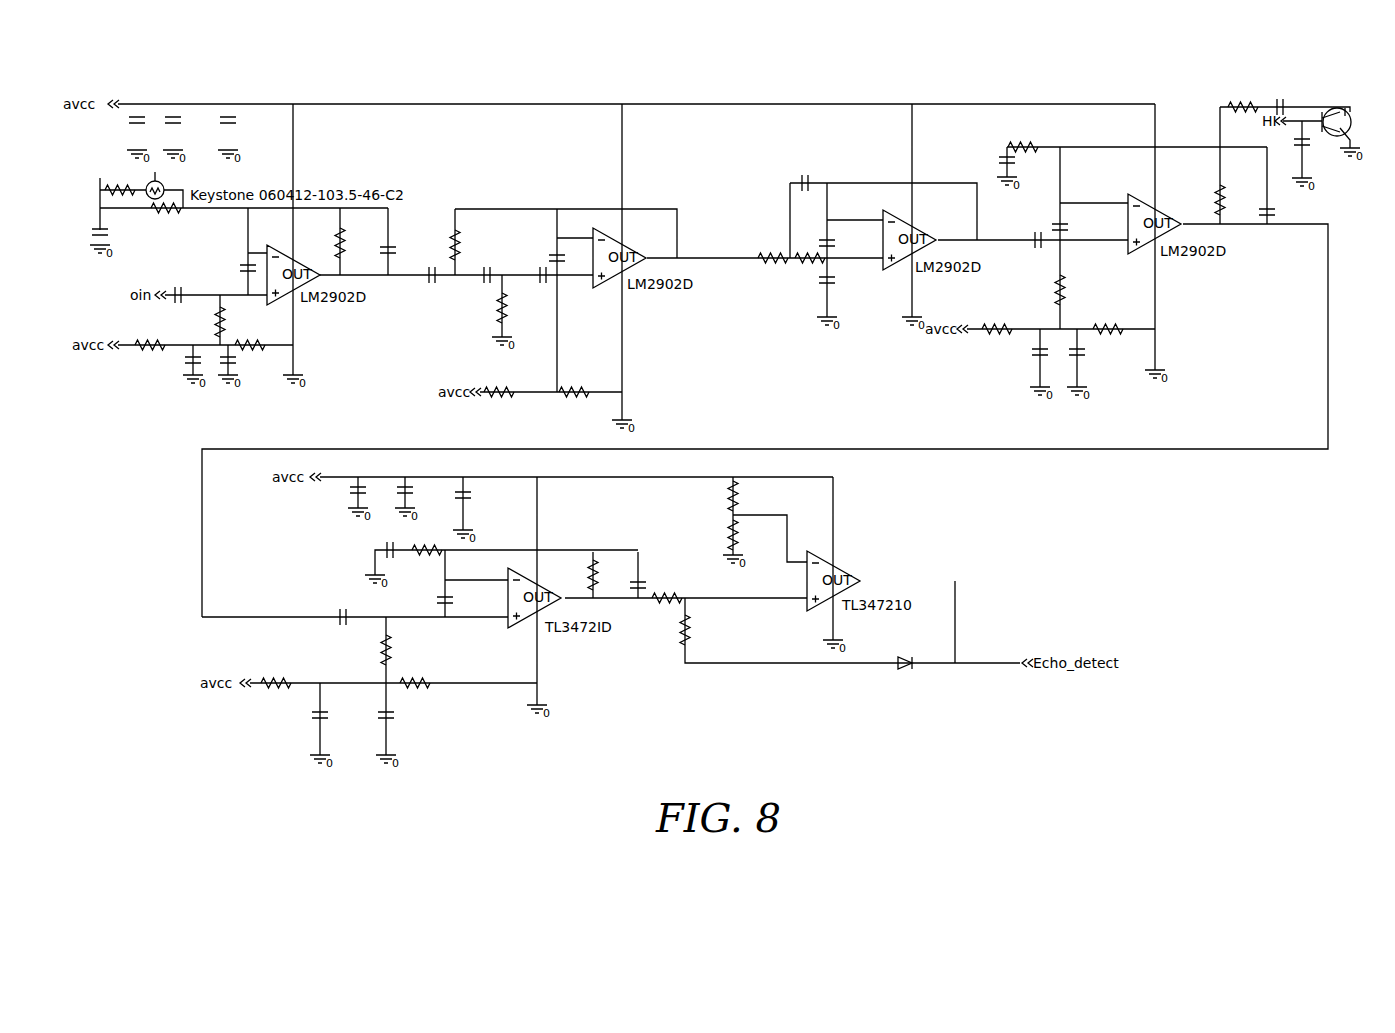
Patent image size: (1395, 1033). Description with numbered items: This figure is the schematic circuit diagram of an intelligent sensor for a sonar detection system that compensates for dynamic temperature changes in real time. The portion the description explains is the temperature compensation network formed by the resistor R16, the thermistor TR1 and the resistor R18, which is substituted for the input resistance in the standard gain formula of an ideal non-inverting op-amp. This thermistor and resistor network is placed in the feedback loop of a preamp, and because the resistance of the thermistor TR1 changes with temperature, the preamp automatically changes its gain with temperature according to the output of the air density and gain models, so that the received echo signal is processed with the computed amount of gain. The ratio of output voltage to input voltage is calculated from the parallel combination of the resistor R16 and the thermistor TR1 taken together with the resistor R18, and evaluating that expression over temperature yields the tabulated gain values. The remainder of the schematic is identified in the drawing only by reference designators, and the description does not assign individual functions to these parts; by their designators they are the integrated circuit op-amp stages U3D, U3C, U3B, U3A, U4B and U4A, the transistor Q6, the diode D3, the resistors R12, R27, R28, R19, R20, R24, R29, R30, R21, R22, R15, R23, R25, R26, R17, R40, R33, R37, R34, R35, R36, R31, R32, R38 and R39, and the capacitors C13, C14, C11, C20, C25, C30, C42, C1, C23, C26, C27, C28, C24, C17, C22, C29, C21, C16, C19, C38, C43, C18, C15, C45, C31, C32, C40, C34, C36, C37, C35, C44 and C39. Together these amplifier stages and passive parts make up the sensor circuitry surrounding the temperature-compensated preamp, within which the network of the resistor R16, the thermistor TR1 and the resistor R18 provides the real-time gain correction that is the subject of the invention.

The capacitor .1ufd C13 is at (150, 126).
The capacitor .01ufd C14 is at (188, 126).
The capacitor 10ufd C11 is at (248, 126).
The resistor R16 is at (104, 177).
The thermistor TR1 is at (179, 182).
The resistor R18 is at (169, 212).
The capacitor .05ufd C20 is at (76, 225).
The op amp LM2902D U3D is at (293, 274).
The capacitor 10pfd C25 is at (230, 268).
The capacitor .1ufd C30 is at (183, 292).
The resistor 47k R12 is at (233, 318).
The resistor 47k R27 is at (150, 343).
The resistor 47k R28 is at (255, 343).
The capacitor .1ufd C42 is at (170, 374).
The capacitor 10ufd C1 is at (247, 374).
The resistor 75k R19 is at (354, 238).
The capacitor 33pfd C23 is at (402, 239).
The capacitor 680pfd C26 is at (421, 274).
The resistor 2k R20 is at (469, 254).
The capacitor .01ufd C27 is at (498, 281).
The resistor 13.7k R24 is at (520, 309).
The capacitor 680pfd C28 is at (531, 283).
The capacitor 10pfd C24 is at (570, 253).
The op amp LM2902D U3C is at (618, 260).
The resistor 100k R29 is at (504, 389).
The resistor 100k R30 is at (577, 389).
The resistor 1.2k R21 is at (770, 257).
The resistor 3k R22 is at (810, 257).
The capacitor 6800pfd C17 is at (807, 176).
The capacitor 10pfd C22 is at (841, 238).
The capacitor 680pfd C29 is at (845, 284).
The op amp LM2902D U3B is at (909, 241).
The capacitor .01ufd C21 is at (1029, 240).
The resistor 200 R15 is at (1024, 133).
The capacitor .1ufd C16 is at (1024, 165).
The capacitor 10pfd C19 is at (1075, 226).
The resistor 10k R23 is at (1073, 294).
The op amp LM2902D U3A is at (1153, 224).
The resistor 10k R25 is at (996, 327).
The resistor 10k R26 is at (1109, 327).
The capacitor 10ufd C38 is at (1019, 365).
The capacitor .1ufd C43 is at (1094, 365).
The resistor 4.7k R17 is at (1235, 206).
The capacitor 39pfd C18 is at (1281, 203).
The resistor 100 R40 is at (1244, 102).
The capacitor .1ufd C15 is at (1299, 89).
The transistor MMBTA14LT Q6 is at (1347, 111).
The capacitor .1ufd C45 is at (1302, 150).
The capacitor .1ufd C31 is at (339, 497).
The capacitor .01ufd C32 is at (423, 497).
The capacitor 10ufd C40 is at (482, 497).
The capacitor .1ufd C34 is at (397, 548).
The resistor 1k R33 is at (433, 549).
The capacitor 10pfd C36 is at (460, 599).
The capacitor 1ufd C37 is at (344, 616).
The op amp TL3472ID U4B is at (538, 597).
The resistor 10k R37 is at (402, 633).
The resistor 4.7k R34 is at (607, 585).
The capacitor 39pfd C35 is at (652, 569).
The resistor 1k R35 is at (669, 599).
The resistor 3.32k R36 is at (703, 628).
The resistor 4.7k R31 is at (749, 497).
The resistor 3.3k R32 is at (749, 537).
The op amp TL3472 U4A is at (835, 579).
The diode MMSD914T1 D3 is at (919, 662).
The resistor 10k R38 is at (275, 682).
The resistor 10k R39 is at (414, 682).
The capacitor 1ufd C44 is at (336, 720).
The capacitor 10ufd C39 is at (406, 720).